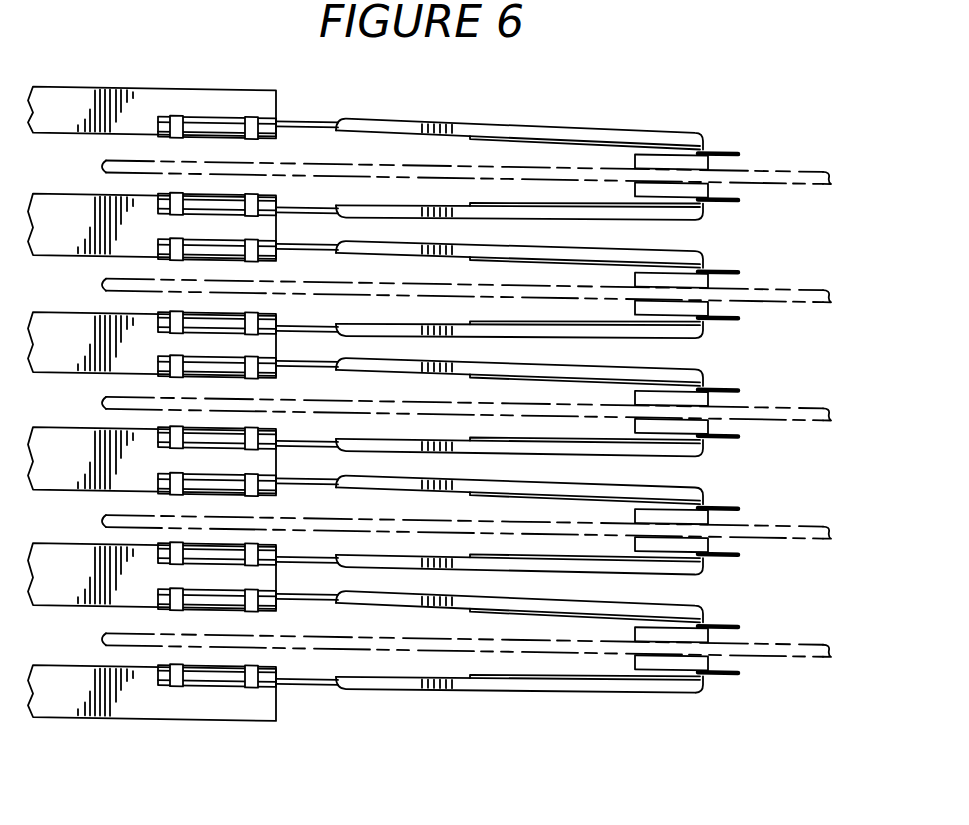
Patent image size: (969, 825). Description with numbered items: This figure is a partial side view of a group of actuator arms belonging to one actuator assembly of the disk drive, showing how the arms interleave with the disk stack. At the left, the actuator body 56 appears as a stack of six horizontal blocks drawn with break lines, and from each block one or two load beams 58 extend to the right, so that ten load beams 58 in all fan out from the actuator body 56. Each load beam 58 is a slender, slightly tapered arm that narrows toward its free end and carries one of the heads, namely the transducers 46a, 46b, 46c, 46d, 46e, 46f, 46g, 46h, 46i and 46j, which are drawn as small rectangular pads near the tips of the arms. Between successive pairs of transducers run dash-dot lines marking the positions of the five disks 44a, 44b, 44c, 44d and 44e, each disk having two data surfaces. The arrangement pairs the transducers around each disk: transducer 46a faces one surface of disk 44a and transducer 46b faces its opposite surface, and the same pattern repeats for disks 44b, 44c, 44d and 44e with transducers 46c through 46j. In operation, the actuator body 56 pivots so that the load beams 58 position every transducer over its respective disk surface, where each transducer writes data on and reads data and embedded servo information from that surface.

The actuator body 56 is at (182, 101).
The load beam 58 is at (460, 121).
The disk 44a is at (99, 165).
The disk 44b is at (99, 283).
The disk 44c is at (99, 401).
The disk 44d is at (99, 519).
The disk 44e is at (99, 638).
The transducer 46a is at (686, 151).
The transducer 46b is at (692, 179).
The transducer 46c is at (688, 269).
The transducer 46d is at (688, 301).
The transducer 46e is at (688, 387).
The transducer 46f is at (688, 417).
The transducer 46g is at (688, 503).
The transducer 46h is at (688, 536).
The transducer 46i is at (688, 621).
The transducer 46j is at (685, 654).